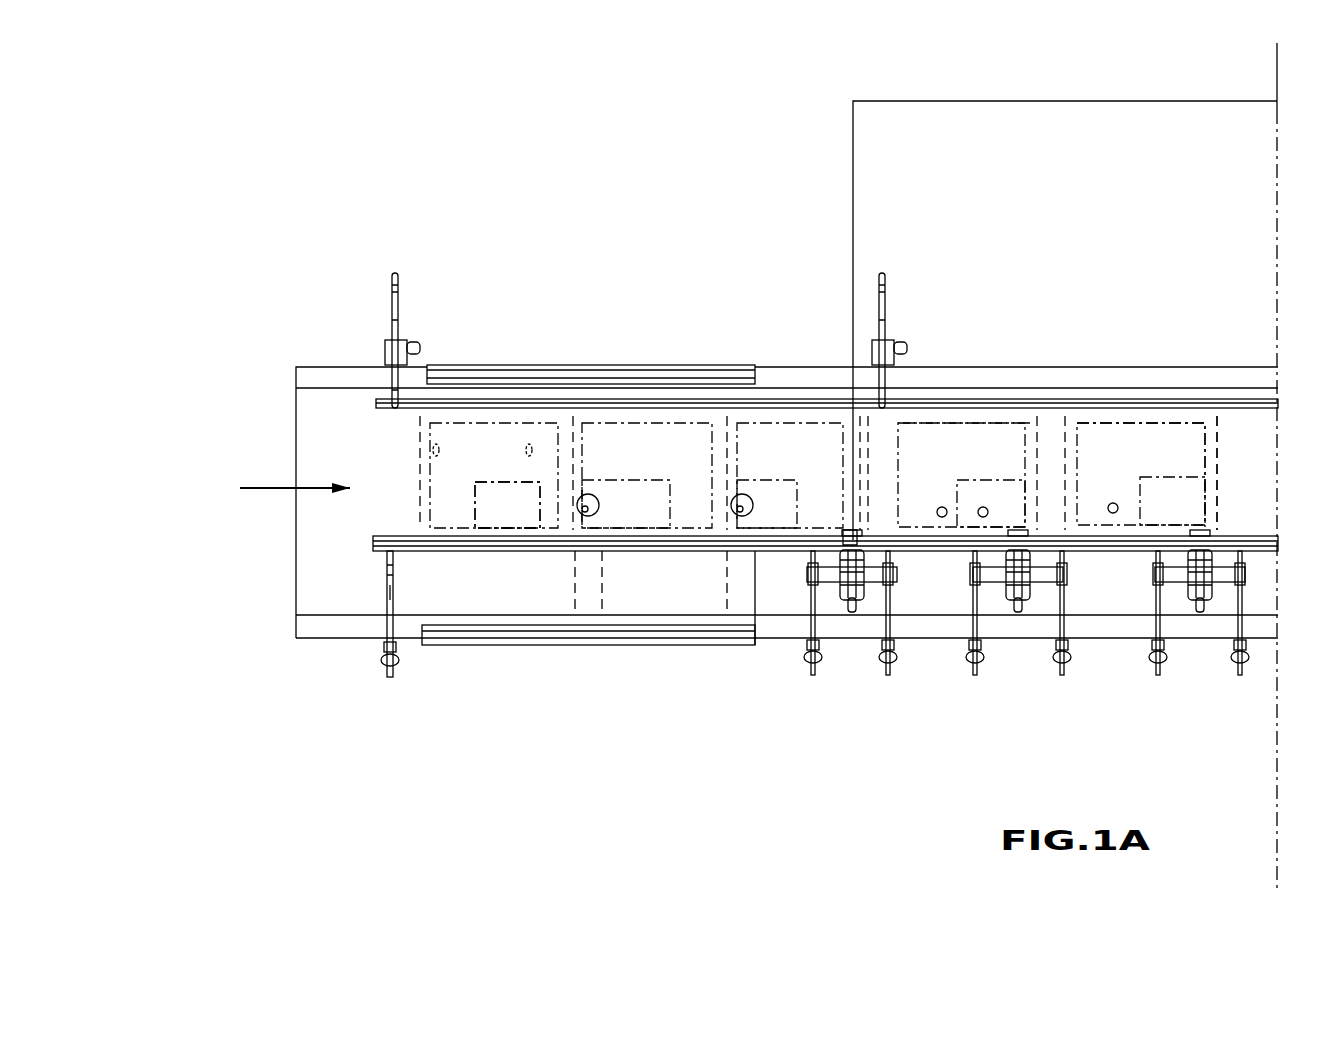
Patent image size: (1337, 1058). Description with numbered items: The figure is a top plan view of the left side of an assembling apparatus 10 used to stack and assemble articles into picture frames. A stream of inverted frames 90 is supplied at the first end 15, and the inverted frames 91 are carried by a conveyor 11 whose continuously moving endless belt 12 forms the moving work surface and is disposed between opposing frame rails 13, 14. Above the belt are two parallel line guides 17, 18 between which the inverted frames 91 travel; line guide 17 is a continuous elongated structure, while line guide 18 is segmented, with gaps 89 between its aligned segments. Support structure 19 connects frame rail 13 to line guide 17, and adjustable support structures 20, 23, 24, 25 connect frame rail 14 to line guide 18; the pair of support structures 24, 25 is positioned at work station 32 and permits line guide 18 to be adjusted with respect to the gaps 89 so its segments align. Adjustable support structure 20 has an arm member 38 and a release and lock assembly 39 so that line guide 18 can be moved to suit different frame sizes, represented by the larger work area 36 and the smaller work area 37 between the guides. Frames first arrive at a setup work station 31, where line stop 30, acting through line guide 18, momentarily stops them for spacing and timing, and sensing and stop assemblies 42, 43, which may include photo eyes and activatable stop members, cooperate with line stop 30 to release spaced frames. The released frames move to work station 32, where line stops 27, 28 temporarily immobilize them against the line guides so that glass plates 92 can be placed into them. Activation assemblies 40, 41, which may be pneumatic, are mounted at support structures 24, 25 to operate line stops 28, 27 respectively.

The assembling apparatus 10 is at (790, 218).
The conveyor 11 is at (343, 363).
The endless belt 12 is at (308, 595).
The frame rail 13 is at (800, 378).
The frame rail 14 is at (788, 628).
The first end 15 is at (345, 532).
The line guide 17 is at (400, 410).
The line guide 18 is at (690, 522).
The support structure 19 is at (398, 316).
The adjustable support structure 20 is at (395, 600).
The adjustable support structure 23 is at (900, 592).
The adjustable support structure 24 is at (1072, 585).
The adjustable support structure 25 is at (1247, 573).
The line stop 27 is at (1218, 522).
The line stop 28 is at (1040, 520).
The line stop 30 is at (862, 525).
The setup work station 31 is at (683, 357).
The work station 32 is at (1095, 188).
The work area 36 is at (973, 445).
The work area 37 is at (986, 506).
The arm member 38 is at (390, 585).
The release and lock assembly 39 is at (383, 645).
The activation assembly 40 is at (1033, 602).
The activation assembly 41 is at (1222, 595).
The sensing and stop assembly 42 is at (556, 592).
The sensing and stop assembly 43 is at (718, 575).
The gap 89 is at (852, 527).
The stream of inverted frames 90 is at (420, 457).
The inverted frame 91 is at (1030, 420).
The glass plate 92 is at (1175, 445).